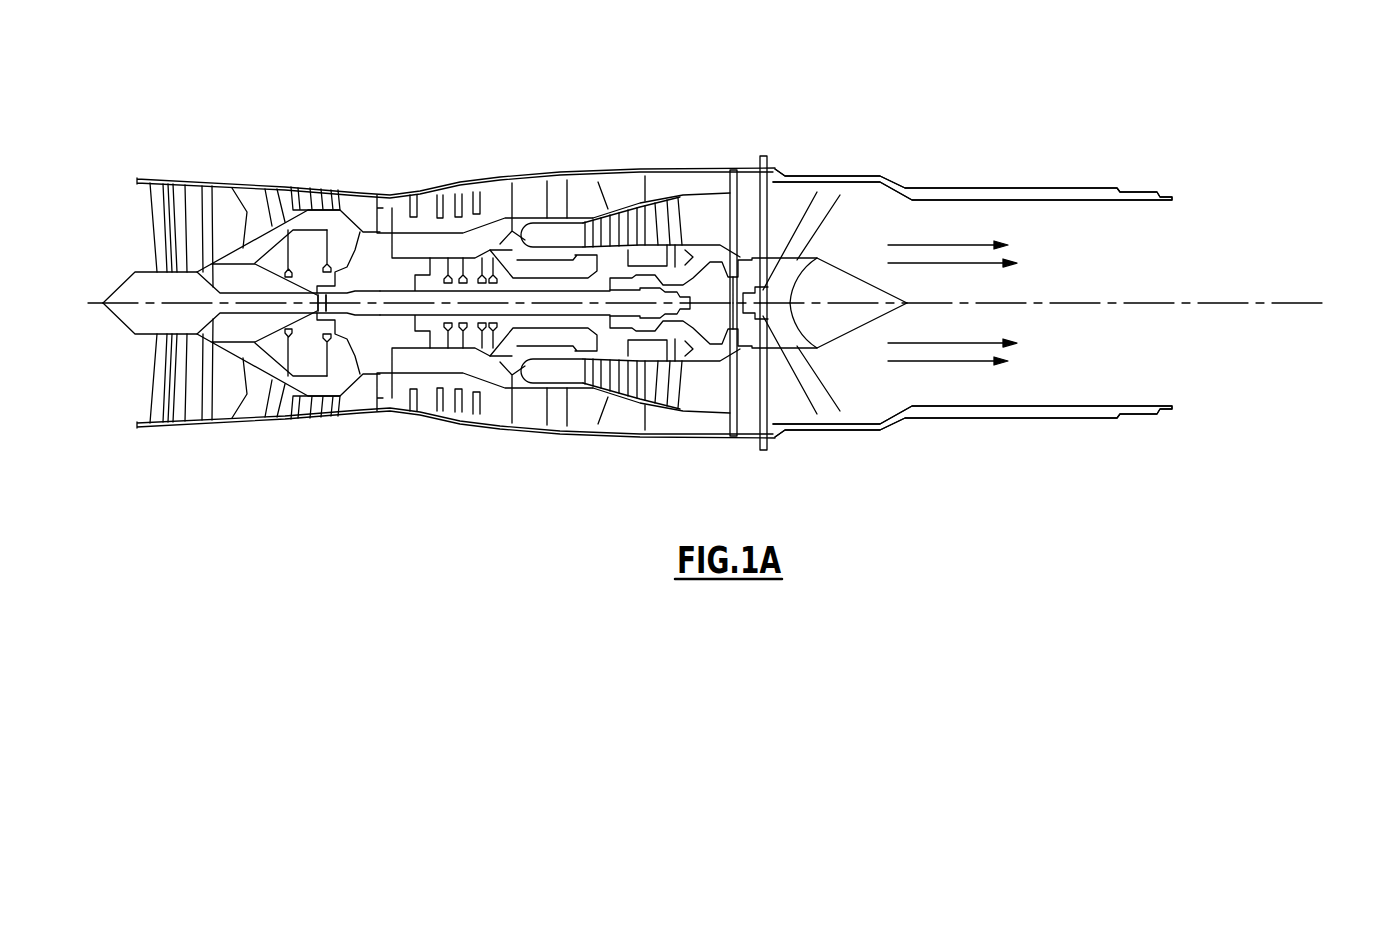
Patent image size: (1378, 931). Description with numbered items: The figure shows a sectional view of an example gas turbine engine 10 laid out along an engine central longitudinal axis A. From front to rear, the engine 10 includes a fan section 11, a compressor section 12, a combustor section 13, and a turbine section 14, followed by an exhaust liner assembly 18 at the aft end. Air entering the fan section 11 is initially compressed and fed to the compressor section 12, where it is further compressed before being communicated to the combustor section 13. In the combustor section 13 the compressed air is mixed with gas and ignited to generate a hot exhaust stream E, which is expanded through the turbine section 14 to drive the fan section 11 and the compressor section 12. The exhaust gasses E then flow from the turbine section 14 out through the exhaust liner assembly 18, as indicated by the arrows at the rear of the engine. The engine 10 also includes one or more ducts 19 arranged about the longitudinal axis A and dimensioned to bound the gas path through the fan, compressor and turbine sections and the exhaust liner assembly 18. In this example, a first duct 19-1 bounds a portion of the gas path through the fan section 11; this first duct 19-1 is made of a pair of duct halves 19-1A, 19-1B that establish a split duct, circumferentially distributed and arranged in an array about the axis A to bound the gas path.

The gas turbine engine 10 is at (728, 246).
The fan section 11 is at (357, 108).
The compressor section 12 is at (533, 108).
The combustor section 13 is at (617, 108).
The turbine section 14 is at (783, 108).
The exhaust liner assembly 18 is at (1165, 108).
The ducts 19 is at (654, 300).
The first duct 19-1 is at (456, 166).
The duct half 19-1A is at (253, 180).
The duct half 19-1B is at (255, 425).
The engine central longitudinal axis A is at (1330, 302).
The hot exhaust stream E is at (965, 380).